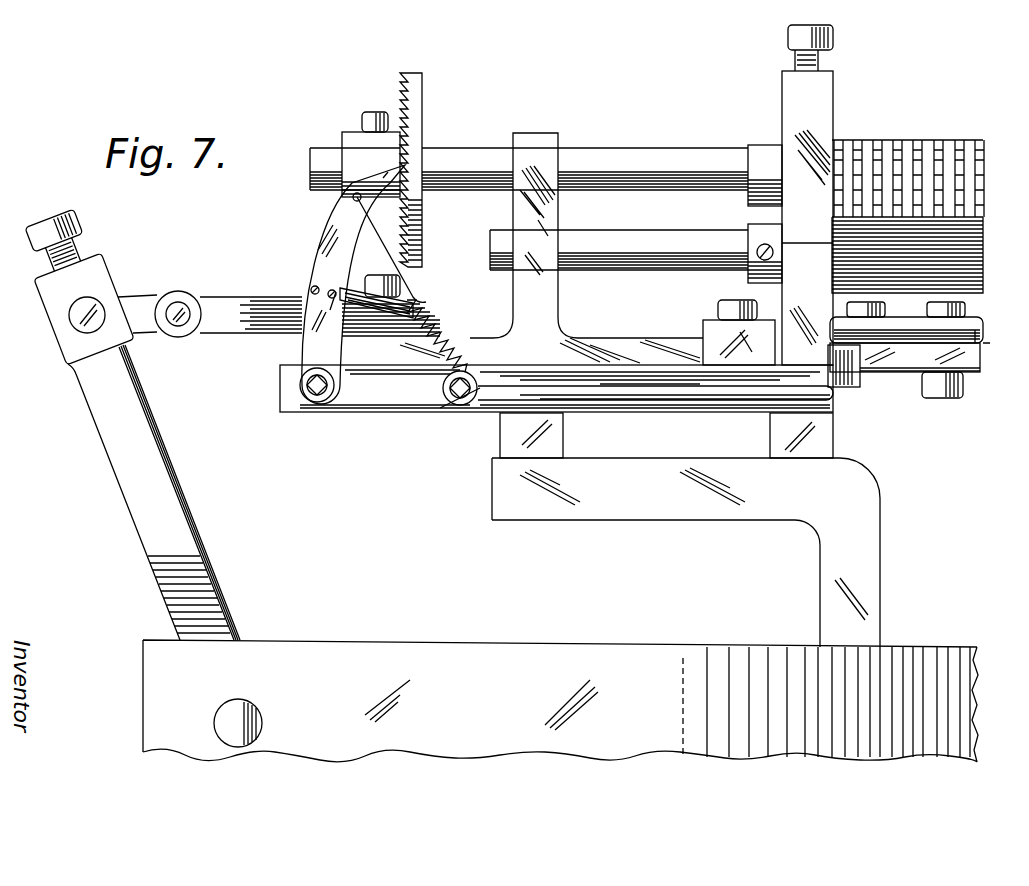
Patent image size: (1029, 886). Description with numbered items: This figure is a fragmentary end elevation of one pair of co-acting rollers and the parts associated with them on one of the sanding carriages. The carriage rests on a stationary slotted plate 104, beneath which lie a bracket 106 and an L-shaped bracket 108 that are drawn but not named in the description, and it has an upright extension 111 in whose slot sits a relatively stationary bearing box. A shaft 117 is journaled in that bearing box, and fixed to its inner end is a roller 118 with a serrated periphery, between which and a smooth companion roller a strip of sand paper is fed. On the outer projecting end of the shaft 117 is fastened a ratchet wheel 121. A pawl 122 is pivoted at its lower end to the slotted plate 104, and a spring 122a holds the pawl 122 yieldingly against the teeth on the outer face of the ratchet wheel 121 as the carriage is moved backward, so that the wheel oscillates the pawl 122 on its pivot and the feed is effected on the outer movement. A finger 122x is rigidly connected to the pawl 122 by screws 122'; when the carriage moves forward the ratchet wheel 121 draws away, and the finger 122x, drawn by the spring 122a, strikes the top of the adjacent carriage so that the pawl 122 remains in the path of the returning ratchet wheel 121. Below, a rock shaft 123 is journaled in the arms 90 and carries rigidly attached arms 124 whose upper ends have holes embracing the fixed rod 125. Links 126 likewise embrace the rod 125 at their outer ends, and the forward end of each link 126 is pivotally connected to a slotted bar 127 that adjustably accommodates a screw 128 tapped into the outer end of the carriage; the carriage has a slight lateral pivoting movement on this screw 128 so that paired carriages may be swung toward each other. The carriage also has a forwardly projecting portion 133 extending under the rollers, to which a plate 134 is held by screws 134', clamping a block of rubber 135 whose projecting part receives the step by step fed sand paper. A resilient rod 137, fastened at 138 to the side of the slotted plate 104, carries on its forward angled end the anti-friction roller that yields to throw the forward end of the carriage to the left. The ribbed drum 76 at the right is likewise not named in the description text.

The ribbed drum 76 is at (832, 272).
The arms 90 is at (650, 656).
The slotted plate 104 is at (396, 410).
The bracket 106 is at (553, 440).
The L-shaped bracket 108 is at (740, 508).
The upright extension 111 is at (536, 133).
The shaft 117 is at (660, 156).
The roller 118 is at (690, 258).
The ratchet wheel 121 is at (410, 80).
The pawl 122 is at (327, 284).
The screws 122' is at (290, 286).
The finger 122x is at (414, 294).
The spring 122a is at (450, 328).
The rock shaft 123 is at (263, 719).
The arms 124 is at (160, 470).
The fixed rod 125 is at (76, 318).
The links 126 is at (146, 297).
The bar 127 is at (229, 320).
The screw 128 is at (381, 280).
The forwardly projecting portion 133 is at (970, 359).
The plate 134 is at (929, 322).
The screws 134' is at (974, 394).
The block of rubber 135 is at (984, 336).
The resilient rod 137 is at (676, 396).
The fastening point 138 is at (455, 408).